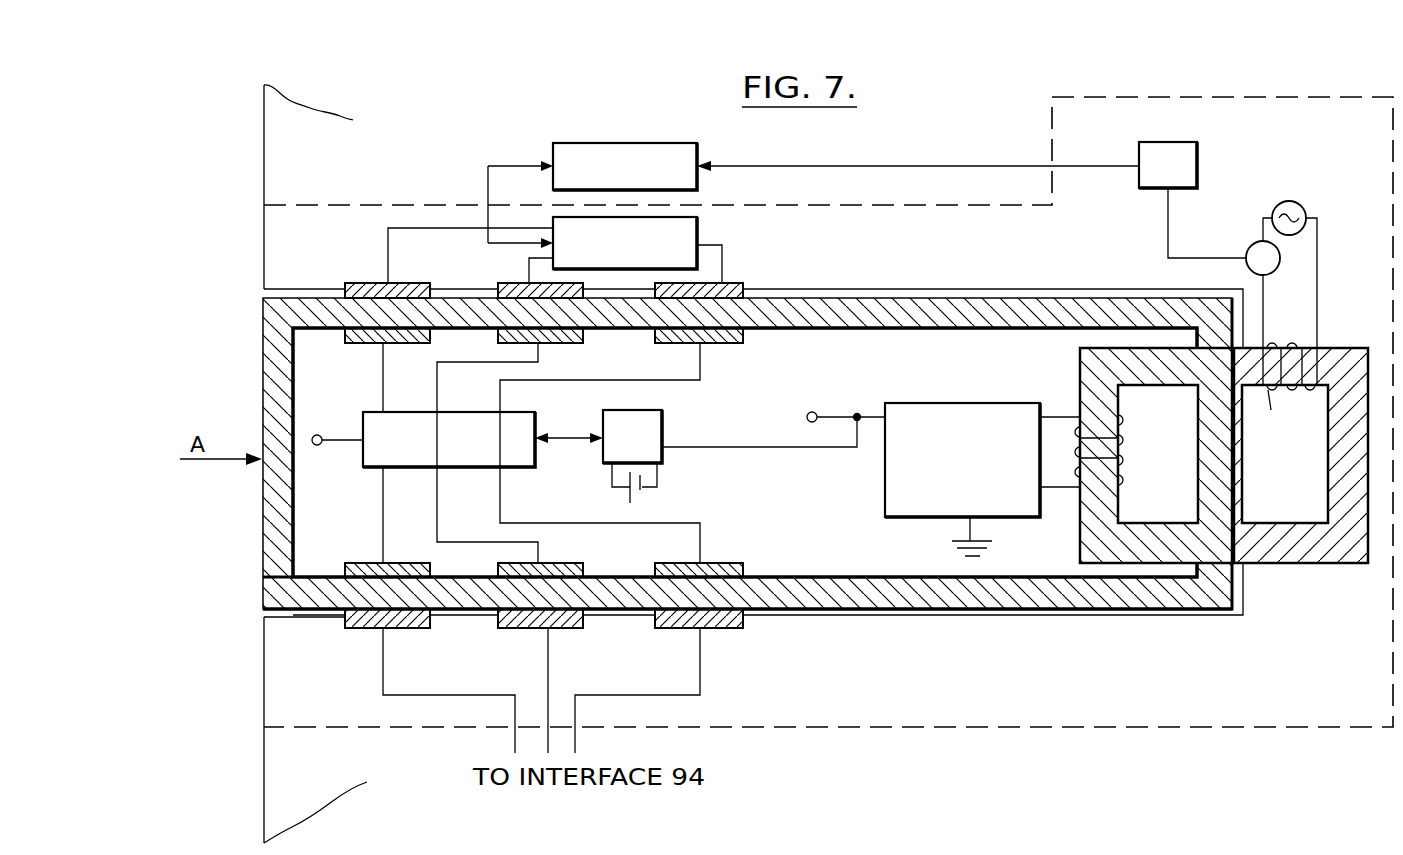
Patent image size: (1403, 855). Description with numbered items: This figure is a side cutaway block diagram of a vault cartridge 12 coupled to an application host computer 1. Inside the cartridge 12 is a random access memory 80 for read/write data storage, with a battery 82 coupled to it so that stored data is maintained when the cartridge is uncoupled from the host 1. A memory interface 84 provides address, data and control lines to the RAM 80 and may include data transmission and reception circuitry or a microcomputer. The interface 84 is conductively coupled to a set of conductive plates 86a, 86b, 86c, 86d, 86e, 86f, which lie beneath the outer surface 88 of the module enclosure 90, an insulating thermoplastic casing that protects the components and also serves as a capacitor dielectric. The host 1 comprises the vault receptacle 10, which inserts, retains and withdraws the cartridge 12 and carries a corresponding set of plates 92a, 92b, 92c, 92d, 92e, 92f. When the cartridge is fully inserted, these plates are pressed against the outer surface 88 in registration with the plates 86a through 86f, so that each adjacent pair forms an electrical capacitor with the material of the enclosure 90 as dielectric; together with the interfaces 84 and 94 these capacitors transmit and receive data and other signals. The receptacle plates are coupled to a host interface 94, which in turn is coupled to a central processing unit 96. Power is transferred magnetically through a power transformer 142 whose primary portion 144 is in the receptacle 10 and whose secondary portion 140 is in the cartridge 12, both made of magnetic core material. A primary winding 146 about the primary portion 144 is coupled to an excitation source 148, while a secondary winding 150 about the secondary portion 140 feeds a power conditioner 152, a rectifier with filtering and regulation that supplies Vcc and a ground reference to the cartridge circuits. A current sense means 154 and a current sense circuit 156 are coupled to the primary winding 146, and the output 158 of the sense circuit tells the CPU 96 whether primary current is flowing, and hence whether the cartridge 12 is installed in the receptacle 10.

The application host computer 1 is at (264, 125).
The vault receptacle 10 is at (264, 235).
The vault cartridge 12 is at (860, 373).
The random access memory 80 is at (662, 428).
The battery 82 is at (638, 494).
The memory interface 84 is at (536, 422).
The conductive plate 86a is at (365, 445).
The conductive plate 86b is at (583, 346).
The conductive plate 86c is at (733, 343).
The conductive plate 86d is at (350, 560).
The conductive plate 86e is at (588, 562).
The conductive plate 86f is at (743, 561).
The outer surface 88 is at (263, 345).
The module enclosure 90 is at (280, 530).
The conductive plate 92a is at (368, 283).
The conductive plate 92b is at (510, 283).
The conductive plate 92c is at (745, 283).
The conductive plate 92d is at (357, 628).
The conductive plate 92e is at (520, 630).
The conductive plate 92f is at (675, 628).
The host interface 94 is at (697, 225).
The central processing unit 96 is at (629, 143).
The secondary portion 140 is at (1080, 358).
The power transformer 142 is at (1281, 578).
The primary portion 144 is at (1313, 563).
The primary winding 146 is at (1290, 389).
The excitation source 148 is at (1303, 208).
The secondary winding 150 is at (1125, 462).
The power conditioner 152 is at (949, 403).
The current sense means 154 is at (1250, 246).
The current sense circuit 156 is at (1139, 145).
The current sense output 158 is at (946, 164).